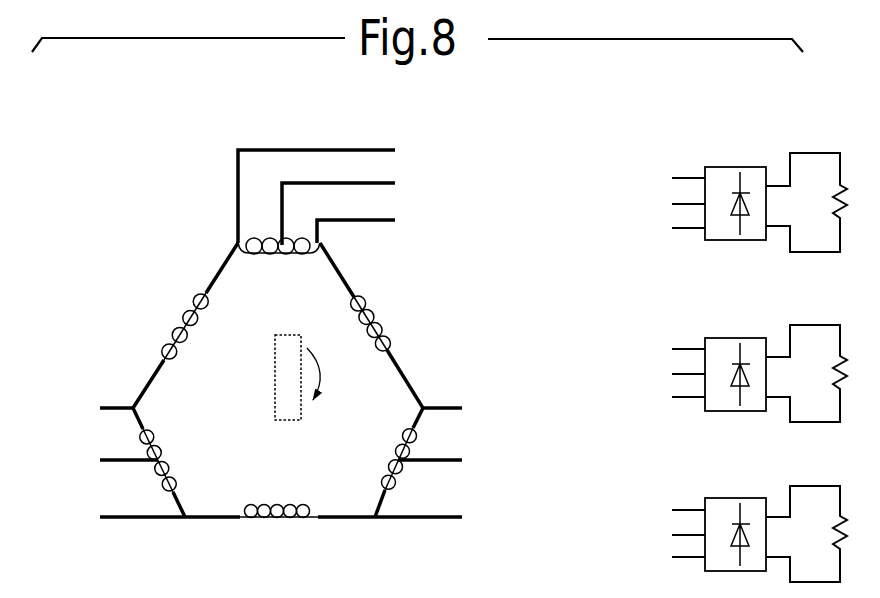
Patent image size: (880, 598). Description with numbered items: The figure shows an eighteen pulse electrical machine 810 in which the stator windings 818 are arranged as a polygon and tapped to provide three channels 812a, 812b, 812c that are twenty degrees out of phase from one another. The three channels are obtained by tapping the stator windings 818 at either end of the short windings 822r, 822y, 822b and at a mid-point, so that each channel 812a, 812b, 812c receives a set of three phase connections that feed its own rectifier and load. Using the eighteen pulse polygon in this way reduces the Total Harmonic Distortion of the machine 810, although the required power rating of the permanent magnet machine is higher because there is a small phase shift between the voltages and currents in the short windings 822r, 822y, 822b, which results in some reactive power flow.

The 18 pulse electrical machine 810 is at (513, 143).
The first channel 812a is at (665, 148).
The second channel 812b is at (685, 325).
The third channel 812c is at (680, 487).
The stator windings 818 is at (420, 338).
The short winding (red phase) 822r is at (279, 257).
The short winding (blue phase) 822b is at (167, 458).
The short winding (yellow phase) 822y is at (395, 452).